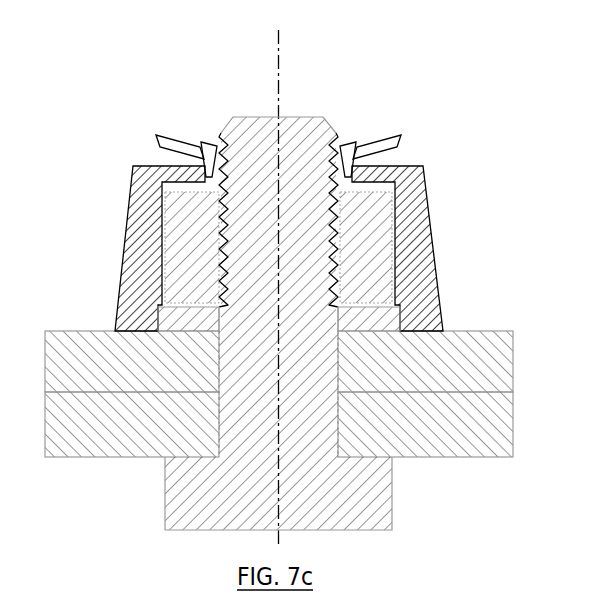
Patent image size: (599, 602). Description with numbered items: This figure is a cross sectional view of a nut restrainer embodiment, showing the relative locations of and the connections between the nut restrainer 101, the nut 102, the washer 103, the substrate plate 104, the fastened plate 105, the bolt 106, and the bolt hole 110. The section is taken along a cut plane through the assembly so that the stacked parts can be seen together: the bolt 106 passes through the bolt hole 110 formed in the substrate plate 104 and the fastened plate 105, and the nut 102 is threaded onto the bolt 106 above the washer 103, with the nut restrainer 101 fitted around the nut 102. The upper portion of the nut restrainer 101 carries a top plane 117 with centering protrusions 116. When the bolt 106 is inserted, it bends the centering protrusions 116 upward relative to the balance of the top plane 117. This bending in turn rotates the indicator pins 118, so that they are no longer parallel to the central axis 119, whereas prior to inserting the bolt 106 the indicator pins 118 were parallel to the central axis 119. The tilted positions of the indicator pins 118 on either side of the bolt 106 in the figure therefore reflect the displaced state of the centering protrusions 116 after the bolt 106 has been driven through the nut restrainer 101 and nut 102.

The nut restrainer 101 is at (125, 237).
The nut 102 is at (392, 251).
The washer 103 is at (400, 318).
The substrate plate 104 is at (98, 328).
The fastened plate 105 is at (407, 457).
The bolt 106 is at (340, 130).
The bolt hole 110 is at (205, 359).
The centering protrusions 116 is at (210, 137).
The top plane 117 is at (390, 161).
The indicator pins 118 is at (175, 132).
The central axis 119 is at (282, 84).